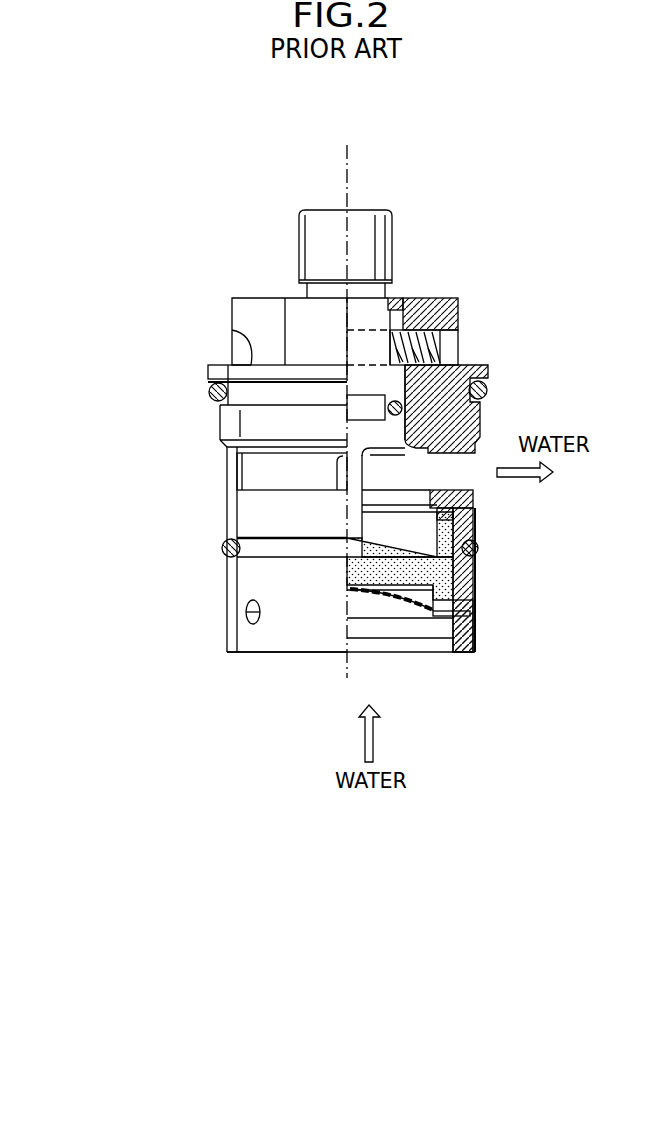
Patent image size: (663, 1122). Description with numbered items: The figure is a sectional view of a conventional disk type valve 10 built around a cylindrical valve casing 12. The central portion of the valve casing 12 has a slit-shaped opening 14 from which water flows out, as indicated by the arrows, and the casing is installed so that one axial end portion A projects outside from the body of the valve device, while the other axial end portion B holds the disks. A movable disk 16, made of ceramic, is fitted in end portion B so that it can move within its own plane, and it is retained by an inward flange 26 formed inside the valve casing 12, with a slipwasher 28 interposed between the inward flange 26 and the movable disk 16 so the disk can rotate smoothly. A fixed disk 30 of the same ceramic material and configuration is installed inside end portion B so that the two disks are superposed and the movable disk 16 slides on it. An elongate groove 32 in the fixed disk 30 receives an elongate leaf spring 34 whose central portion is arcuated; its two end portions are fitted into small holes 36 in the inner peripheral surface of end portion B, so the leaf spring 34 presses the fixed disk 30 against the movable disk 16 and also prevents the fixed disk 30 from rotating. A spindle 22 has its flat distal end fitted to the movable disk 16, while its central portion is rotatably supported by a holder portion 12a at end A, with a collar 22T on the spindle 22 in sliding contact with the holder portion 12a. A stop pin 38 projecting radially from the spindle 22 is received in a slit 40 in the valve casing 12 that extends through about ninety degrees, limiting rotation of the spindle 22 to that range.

The disk type valve 10 is at (143, 423).
The valve casing 12 is at (250, 513).
The holder portion 12a is at (440, 298).
The slit-shaped opening 14 is at (250, 473).
The movable disk 16 is at (474, 567).
The spindle 22 is at (386, 233).
The collar 22T is at (395, 315).
The inward flange 26 is at (413, 490).
The slipwasher 28 is at (464, 525).
The fixed disk 30 is at (348, 578).
The elongate groove 32 is at (412, 585).
The leaf spring 34 is at (370, 588).
The small holes 36 is at (470, 628).
The stop pin 38 is at (440, 345).
The slit 40 is at (453, 357).
The axial end portion A is at (245, 297).
The axial end portion B is at (257, 653).